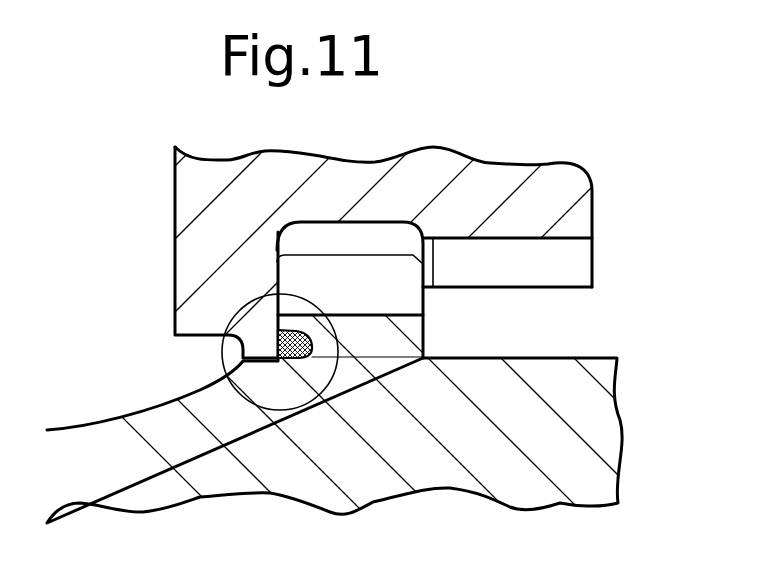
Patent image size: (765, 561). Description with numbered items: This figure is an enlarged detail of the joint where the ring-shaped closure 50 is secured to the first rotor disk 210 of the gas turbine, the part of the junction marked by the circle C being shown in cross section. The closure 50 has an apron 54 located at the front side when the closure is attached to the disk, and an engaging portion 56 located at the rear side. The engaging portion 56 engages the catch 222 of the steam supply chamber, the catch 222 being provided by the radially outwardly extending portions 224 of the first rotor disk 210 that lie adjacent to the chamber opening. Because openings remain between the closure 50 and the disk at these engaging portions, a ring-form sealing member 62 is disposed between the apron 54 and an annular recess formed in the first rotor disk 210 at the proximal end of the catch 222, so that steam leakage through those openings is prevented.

The closure 50 is at (357, 177).
The apron 54 is at (174, 262).
The engaging portion 56 is at (604, 213).
The sealing member 62 is at (298, 330).
The first rotor disk 210 is at (306, 478).
The catch 222 is at (273, 277).
The radially outwardly extending portions 224 is at (314, 355).
The detail circle C is at (222, 352).